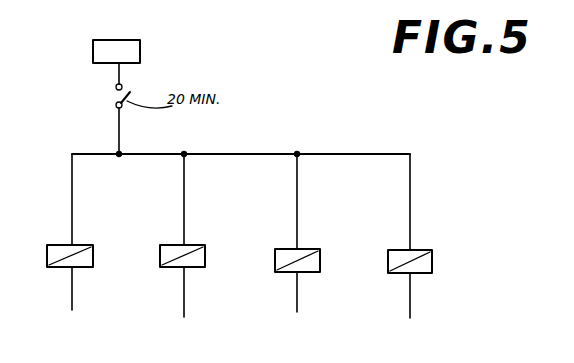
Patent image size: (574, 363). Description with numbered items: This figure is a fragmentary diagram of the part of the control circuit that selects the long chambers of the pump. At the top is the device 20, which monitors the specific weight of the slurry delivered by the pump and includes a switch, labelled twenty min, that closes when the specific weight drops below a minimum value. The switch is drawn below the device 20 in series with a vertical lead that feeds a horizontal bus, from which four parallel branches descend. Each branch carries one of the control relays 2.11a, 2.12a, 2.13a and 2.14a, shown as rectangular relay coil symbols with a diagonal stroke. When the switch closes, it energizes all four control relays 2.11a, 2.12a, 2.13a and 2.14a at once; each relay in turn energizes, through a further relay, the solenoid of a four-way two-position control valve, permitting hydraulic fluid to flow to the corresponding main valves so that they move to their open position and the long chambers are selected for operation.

The device 20 is at (140, 63).
The control relay 2.11a is at (95, 247).
The control relay 2.12a is at (190, 248).
The control relay 2.13a is at (315, 248).
The control relay 2.14a is at (432, 260).